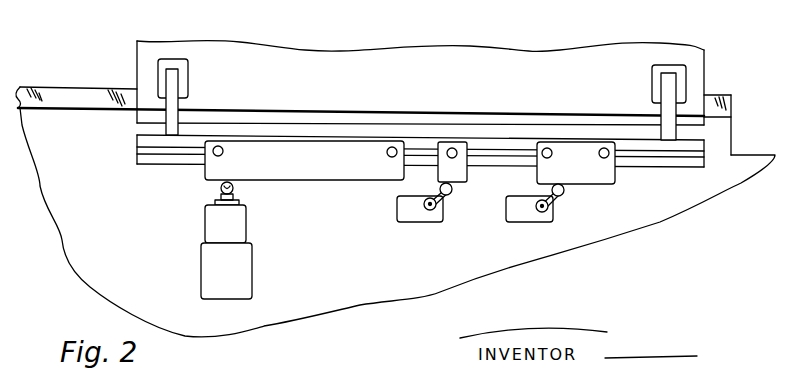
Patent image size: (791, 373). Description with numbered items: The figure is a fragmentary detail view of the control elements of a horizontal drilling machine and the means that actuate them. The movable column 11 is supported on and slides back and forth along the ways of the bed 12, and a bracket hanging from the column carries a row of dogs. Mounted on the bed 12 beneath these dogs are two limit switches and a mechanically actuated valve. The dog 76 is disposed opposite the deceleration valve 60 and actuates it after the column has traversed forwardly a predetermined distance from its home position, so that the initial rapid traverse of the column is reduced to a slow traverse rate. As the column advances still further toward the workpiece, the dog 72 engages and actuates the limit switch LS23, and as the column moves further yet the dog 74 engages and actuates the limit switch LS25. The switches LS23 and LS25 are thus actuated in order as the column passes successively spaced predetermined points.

The column 11 is at (502, 55).
The bed 12 is at (114, 293).
The deceleration valve 60 is at (208, 264).
The dog 72 is at (606, 184).
The dog 74 is at (461, 183).
The dog 76 is at (318, 181).
The limit switch LS25 is at (418, 222).
The limit switch LS23 is at (537, 222).